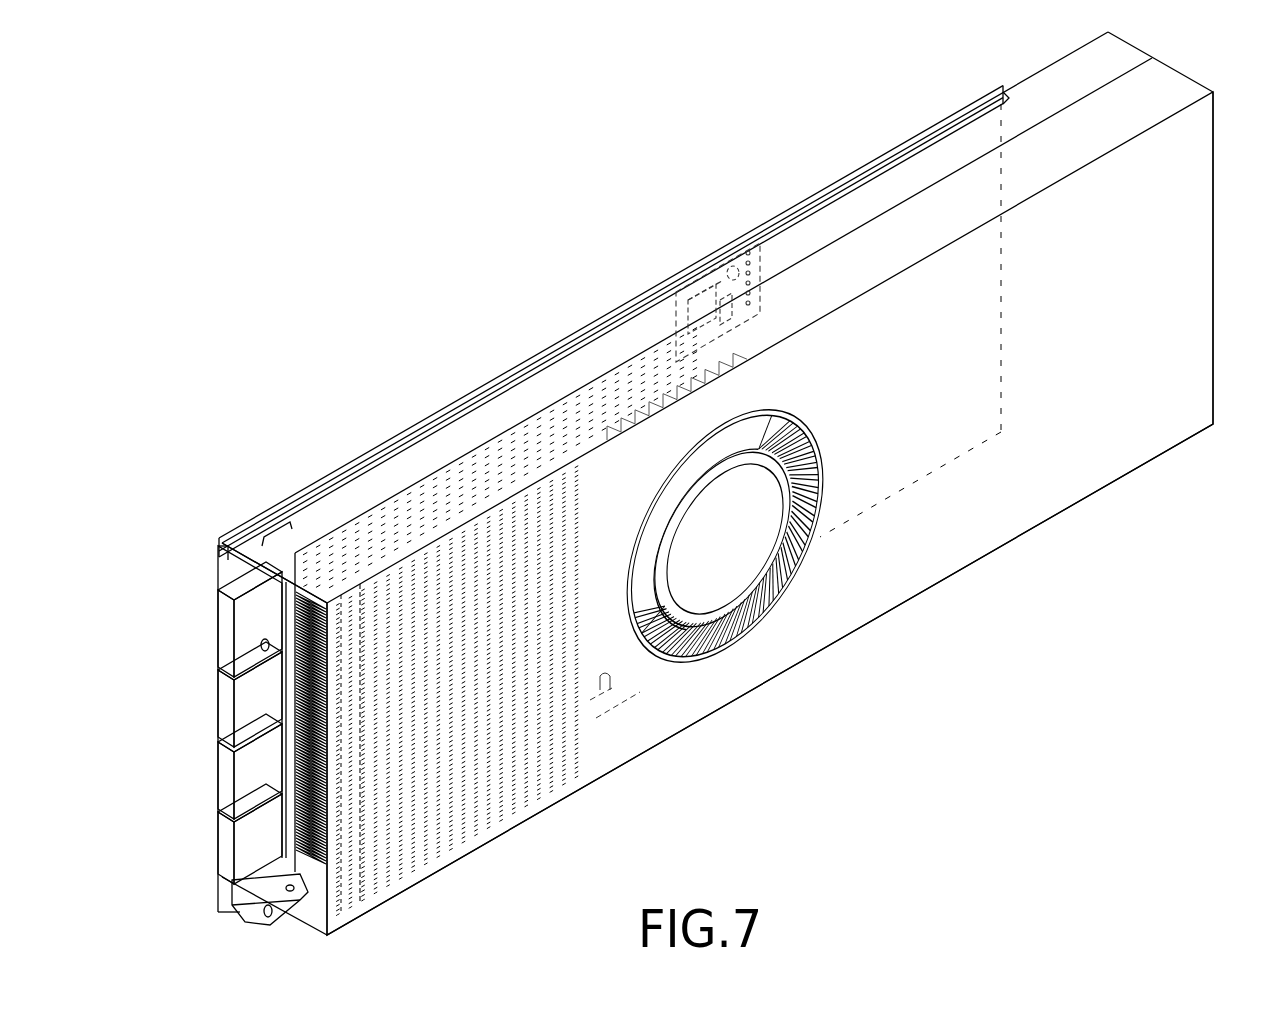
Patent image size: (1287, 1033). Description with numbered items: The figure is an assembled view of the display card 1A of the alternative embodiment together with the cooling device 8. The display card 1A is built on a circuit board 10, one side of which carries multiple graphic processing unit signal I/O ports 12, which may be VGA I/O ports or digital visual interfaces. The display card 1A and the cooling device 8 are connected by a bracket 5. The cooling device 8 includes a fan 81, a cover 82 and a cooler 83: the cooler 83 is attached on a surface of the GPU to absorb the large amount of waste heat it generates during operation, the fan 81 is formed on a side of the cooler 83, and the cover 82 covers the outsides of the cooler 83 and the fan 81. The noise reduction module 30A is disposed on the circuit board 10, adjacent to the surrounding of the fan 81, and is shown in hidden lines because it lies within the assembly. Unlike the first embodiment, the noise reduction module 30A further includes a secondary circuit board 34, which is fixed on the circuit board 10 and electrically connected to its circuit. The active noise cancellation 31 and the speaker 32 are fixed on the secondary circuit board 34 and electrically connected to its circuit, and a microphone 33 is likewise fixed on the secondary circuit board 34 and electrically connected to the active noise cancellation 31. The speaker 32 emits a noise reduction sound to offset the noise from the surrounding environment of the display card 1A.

The display card 1A is at (403, 432).
The bracket 5 is at (1038, 88).
The cooling device 8 is at (1042, 540).
The circuit board 10 is at (347, 470).
The graphic processing unit signal I/O ports 12 is at (228, 632).
The noise reduction module 30A is at (670, 317).
The active noise cancellation 31 is at (710, 296).
The speaker 32 is at (734, 266).
The microphone 33 is at (755, 262).
The secondary circuit board 34 is at (690, 300).
The fan 81 is at (806, 545).
The cover 82 is at (1063, 482).
The cooler 83 is at (532, 785).